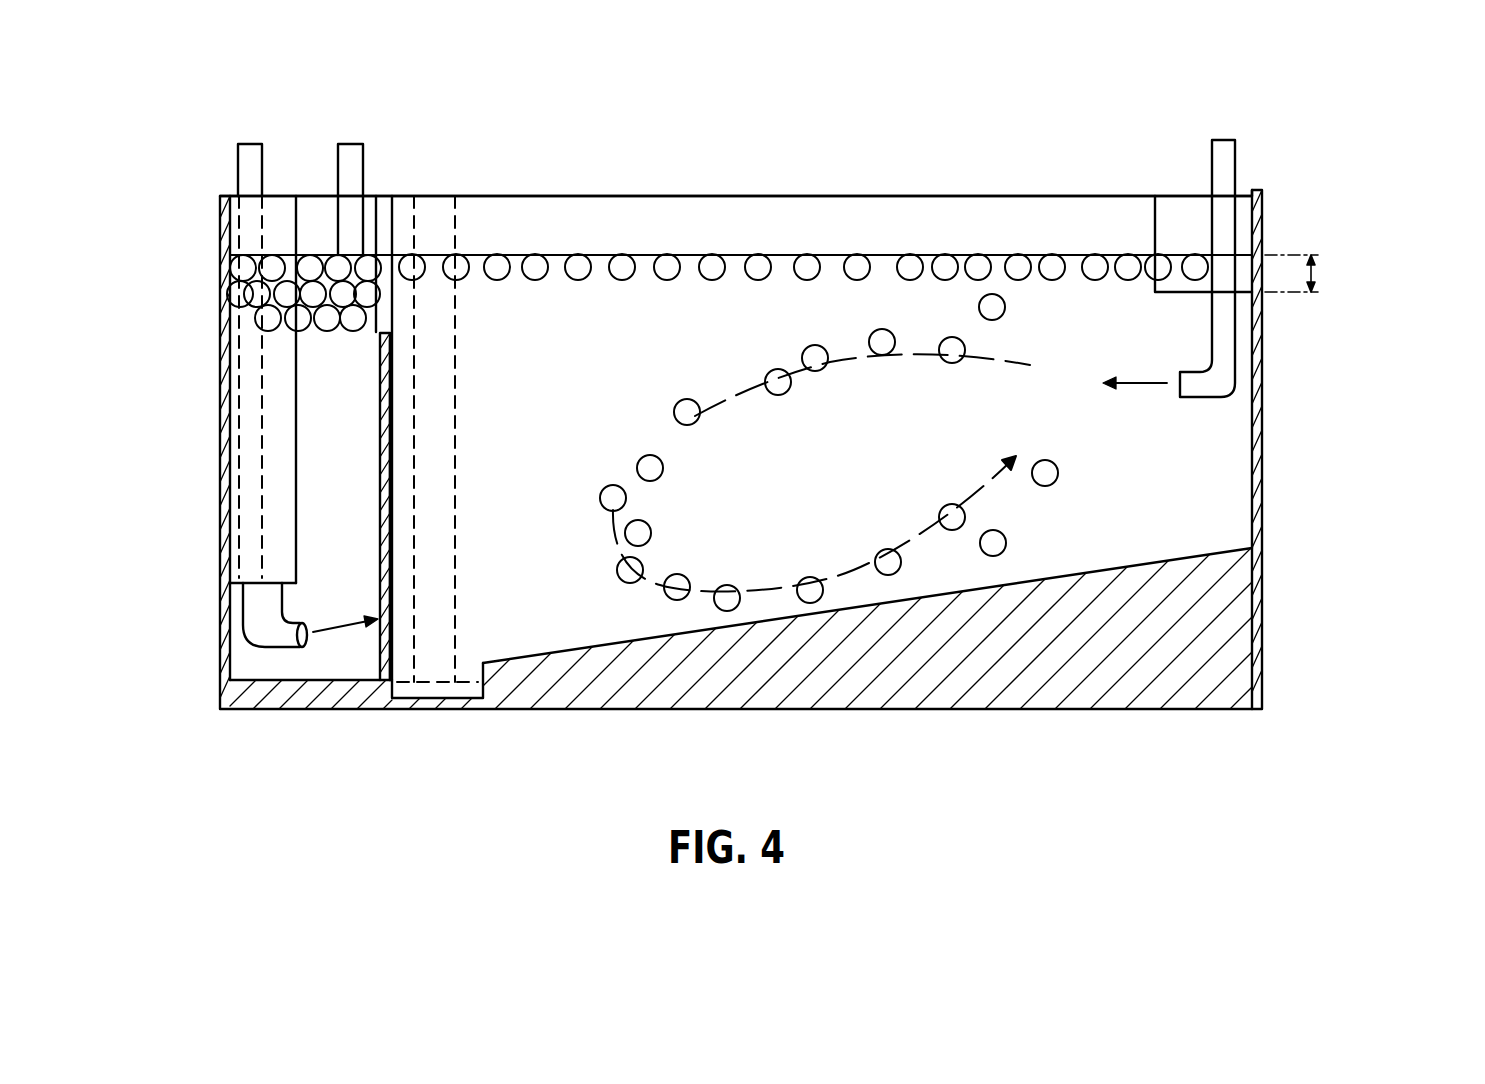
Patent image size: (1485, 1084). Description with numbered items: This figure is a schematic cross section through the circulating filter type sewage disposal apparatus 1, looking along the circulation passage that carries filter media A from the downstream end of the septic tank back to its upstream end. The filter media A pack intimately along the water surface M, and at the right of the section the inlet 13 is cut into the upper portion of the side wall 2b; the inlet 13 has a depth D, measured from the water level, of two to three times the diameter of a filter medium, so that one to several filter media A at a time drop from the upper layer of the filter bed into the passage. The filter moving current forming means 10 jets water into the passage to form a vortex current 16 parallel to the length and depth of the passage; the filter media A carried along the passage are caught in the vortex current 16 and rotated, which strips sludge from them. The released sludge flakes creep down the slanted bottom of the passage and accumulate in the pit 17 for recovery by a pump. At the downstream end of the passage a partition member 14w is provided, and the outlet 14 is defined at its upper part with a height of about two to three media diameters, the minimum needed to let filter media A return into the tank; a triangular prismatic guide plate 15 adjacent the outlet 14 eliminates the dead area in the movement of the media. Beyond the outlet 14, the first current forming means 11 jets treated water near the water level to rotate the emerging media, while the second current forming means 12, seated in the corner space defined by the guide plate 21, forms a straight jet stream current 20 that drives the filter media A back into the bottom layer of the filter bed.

The circulating filter type sewage disposal apparatus 1 is at (1062, 122).
The side wall 2b is at (812, 195).
The filter moving current forming means 10 is at (1222, 160).
The first current forming means 11 is at (348, 147).
The second current forming means 12 is at (255, 167).
The inlet 13 is at (1195, 213).
The outlet 14 is at (383, 335).
The partition member 14w is at (380, 517).
The triangular prismatic guide plate 15 is at (412, 209).
The vortex current 16 is at (765, 592).
The pit 17 is at (443, 695).
The straight jet stream current 20 is at (313, 632).
The guide plate 21 is at (278, 604).
The filter media A is at (578, 262).
The water surface M is at (885, 255).
The depth of the inlet D is at (1320, 271).